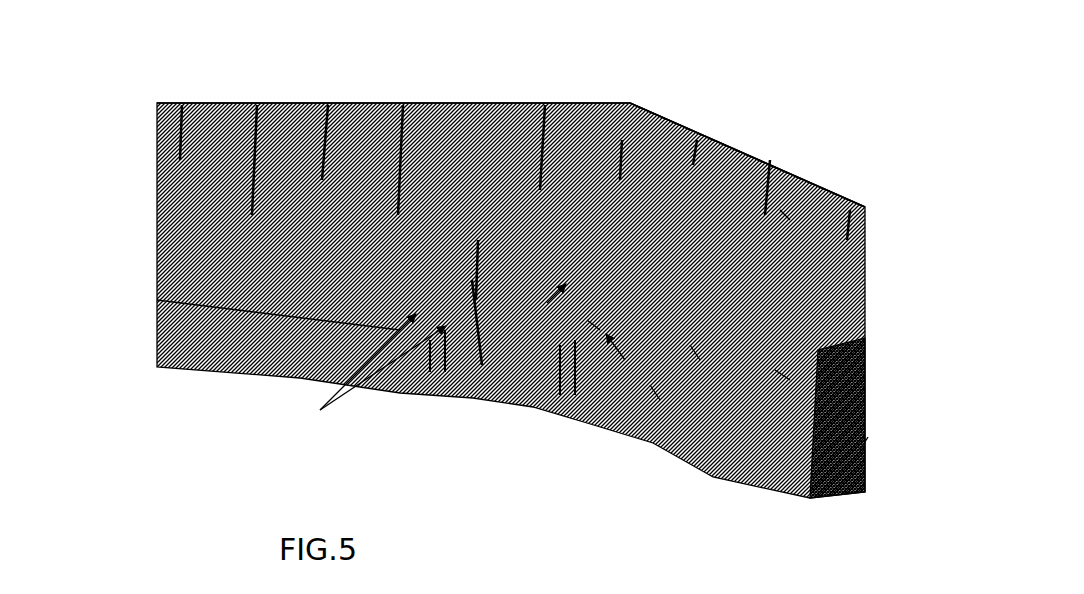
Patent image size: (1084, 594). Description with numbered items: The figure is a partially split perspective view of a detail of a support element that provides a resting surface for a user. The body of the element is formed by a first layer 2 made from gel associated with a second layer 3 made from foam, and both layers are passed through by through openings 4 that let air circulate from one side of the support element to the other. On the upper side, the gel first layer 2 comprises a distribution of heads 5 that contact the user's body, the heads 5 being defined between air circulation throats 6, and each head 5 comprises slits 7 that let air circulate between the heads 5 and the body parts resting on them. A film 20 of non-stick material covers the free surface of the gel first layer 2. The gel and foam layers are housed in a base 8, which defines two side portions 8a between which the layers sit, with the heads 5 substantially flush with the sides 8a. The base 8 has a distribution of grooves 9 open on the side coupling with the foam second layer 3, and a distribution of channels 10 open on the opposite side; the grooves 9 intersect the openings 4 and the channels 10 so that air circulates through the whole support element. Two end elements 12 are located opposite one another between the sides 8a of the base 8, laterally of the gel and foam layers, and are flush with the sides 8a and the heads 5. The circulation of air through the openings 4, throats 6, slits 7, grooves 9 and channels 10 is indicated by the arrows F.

The first layer 2 is at (440, 232).
The second layer 3 is at (460, 215).
The through openings 4 is at (587, 320).
The heads 5 is at (780, 210).
The air circulation throats 6 is at (478, 240).
The slits 7 is at (472, 280).
The base 8 is at (420, 300).
The side portions 8a is at (733, 157).
The grooves 9 is at (650, 385).
The channels 10 is at (433, 373).
The end elements 12 is at (775, 370).
The film 20 is at (235, 150).
The arrows F is at (625, 360).